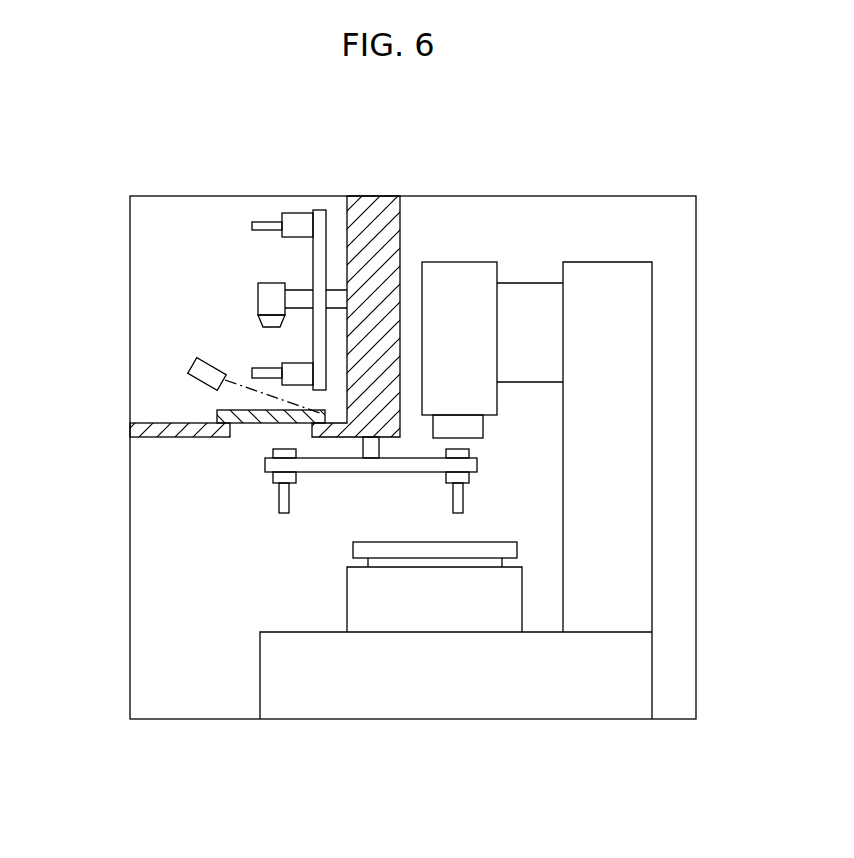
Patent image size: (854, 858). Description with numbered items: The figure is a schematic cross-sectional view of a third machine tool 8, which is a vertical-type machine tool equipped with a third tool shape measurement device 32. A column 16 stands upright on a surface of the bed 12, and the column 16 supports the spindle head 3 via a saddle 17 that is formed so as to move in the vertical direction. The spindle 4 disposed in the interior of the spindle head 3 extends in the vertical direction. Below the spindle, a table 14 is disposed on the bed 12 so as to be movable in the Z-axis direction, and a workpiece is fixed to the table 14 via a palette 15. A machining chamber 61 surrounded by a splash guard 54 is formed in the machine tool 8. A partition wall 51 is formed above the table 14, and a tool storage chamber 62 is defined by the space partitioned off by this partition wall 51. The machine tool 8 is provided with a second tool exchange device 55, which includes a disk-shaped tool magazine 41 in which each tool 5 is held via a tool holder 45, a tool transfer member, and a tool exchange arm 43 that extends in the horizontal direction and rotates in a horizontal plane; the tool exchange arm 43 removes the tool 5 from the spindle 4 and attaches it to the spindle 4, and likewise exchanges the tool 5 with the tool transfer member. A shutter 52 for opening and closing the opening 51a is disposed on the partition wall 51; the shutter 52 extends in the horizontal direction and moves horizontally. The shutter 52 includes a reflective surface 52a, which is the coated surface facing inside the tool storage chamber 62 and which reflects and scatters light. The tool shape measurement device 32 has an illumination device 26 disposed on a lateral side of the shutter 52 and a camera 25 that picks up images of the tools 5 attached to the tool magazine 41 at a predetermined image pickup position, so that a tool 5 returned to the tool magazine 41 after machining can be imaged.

The spindle head 3 is at (456, 283).
The spindle 4 is at (473, 428).
The tool 5 is at (268, 222).
The third machine tool 8 is at (623, 181).
The bed 12 is at (578, 705).
The table 14 is at (368, 613).
The palette 15 is at (442, 552).
The column 16 is at (628, 562).
The saddle 17 is at (529, 300).
The camera 25 is at (257, 284).
The illumination device 26 is at (194, 362).
The third tool shape measurement device 32 is at (249, 306).
The tool magazine 41 is at (320, 212).
The tool exchange arm 43 is at (320, 473).
The tool holder 45 is at (296, 213).
The partition wall 51 is at (375, 222).
The opening 51a is at (240, 425).
The shutter 52 is at (258, 425).
The reflective surface 52a is at (217, 410).
The splash guard 54 is at (696, 292).
The second tool exchange device 55 is at (238, 214).
The machining chamber 61 is at (163, 683).
The tool storage chamber 62 is at (158, 218).